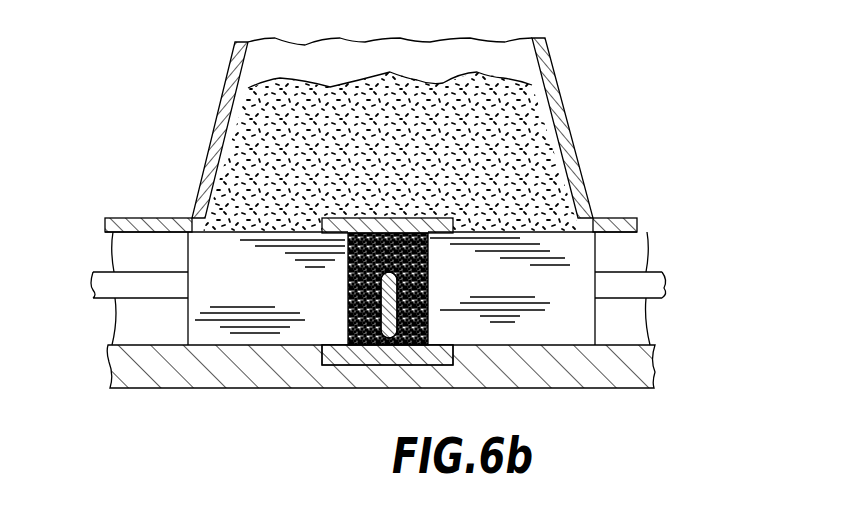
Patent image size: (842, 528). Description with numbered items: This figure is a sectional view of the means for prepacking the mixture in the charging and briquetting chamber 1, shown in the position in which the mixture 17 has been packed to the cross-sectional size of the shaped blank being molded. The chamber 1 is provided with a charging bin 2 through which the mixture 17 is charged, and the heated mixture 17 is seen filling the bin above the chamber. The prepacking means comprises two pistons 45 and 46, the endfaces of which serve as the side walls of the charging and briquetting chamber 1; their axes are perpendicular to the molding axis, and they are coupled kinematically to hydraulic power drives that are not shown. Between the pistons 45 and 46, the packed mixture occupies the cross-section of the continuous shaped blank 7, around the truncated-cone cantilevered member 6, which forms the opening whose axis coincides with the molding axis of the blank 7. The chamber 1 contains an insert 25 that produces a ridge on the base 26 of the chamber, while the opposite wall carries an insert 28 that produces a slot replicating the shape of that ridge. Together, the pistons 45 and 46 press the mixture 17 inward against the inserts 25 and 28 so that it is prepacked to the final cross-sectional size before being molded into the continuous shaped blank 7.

The charging and briquetting chamber 1 is at (600, 163).
The charging bin 2 is at (553, 102).
The mixture 17 is at (222, 117).
The insert 28 is at (375, 232).
The cantilevered member 6 is at (348, 297).
The continuous shaped blank 7 is at (383, 336).
The insert 25 is at (334, 363).
The base 26 is at (243, 368).
The piston 45 is at (557, 247).
The piston 46 is at (230, 250).